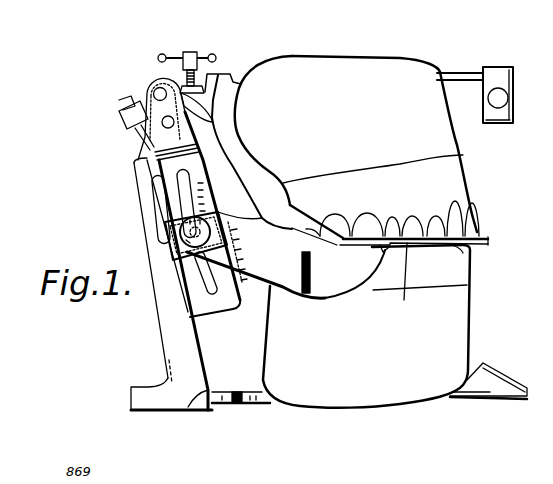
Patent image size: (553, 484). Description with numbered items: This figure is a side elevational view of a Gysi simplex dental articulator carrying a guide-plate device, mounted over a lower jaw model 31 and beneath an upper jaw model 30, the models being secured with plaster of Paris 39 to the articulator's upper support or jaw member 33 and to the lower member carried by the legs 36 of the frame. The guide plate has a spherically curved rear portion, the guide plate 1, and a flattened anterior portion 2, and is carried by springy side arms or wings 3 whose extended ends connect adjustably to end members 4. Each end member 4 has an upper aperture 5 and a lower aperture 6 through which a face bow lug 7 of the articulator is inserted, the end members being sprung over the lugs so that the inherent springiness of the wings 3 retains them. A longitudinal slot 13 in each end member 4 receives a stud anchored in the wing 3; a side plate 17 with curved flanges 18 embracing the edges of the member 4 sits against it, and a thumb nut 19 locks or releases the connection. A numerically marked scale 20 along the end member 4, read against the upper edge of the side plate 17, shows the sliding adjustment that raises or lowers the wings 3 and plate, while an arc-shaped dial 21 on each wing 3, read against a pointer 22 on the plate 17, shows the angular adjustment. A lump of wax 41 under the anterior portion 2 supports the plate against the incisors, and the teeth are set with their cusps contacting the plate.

The guide plate 1 is at (402, 280).
The flattened anterior portion 2 is at (487, 243).
The side arm or wing 3 is at (263, 242).
The adjustable end member 4 is at (190, 167).
The upper aperture 5 is at (157, 89).
The lower aperture 6 is at (163, 130).
The face bow lug 7 is at (145, 102).
The longitudinal slot 13 is at (183, 193).
The side plate 17 is at (188, 264).
The curved flange 18 is at (538, 153).
The thumb nut 19 is at (167, 233).
The numerically marked scale 20 is at (217, 200).
The arc-shaped scale or dial 21 is at (257, 282).
The pointer 22 is at (258, 220).
The upper jaw model 30 is at (381, 195).
The lower jaw model 31 is at (420, 267).
The upper support or jaw member 33 is at (458, 78).
The leg of the articulator frame 36 is at (172, 348).
The plaster of Paris 39 is at (356, 232).
The lump of wax 41 is at (467, 260).